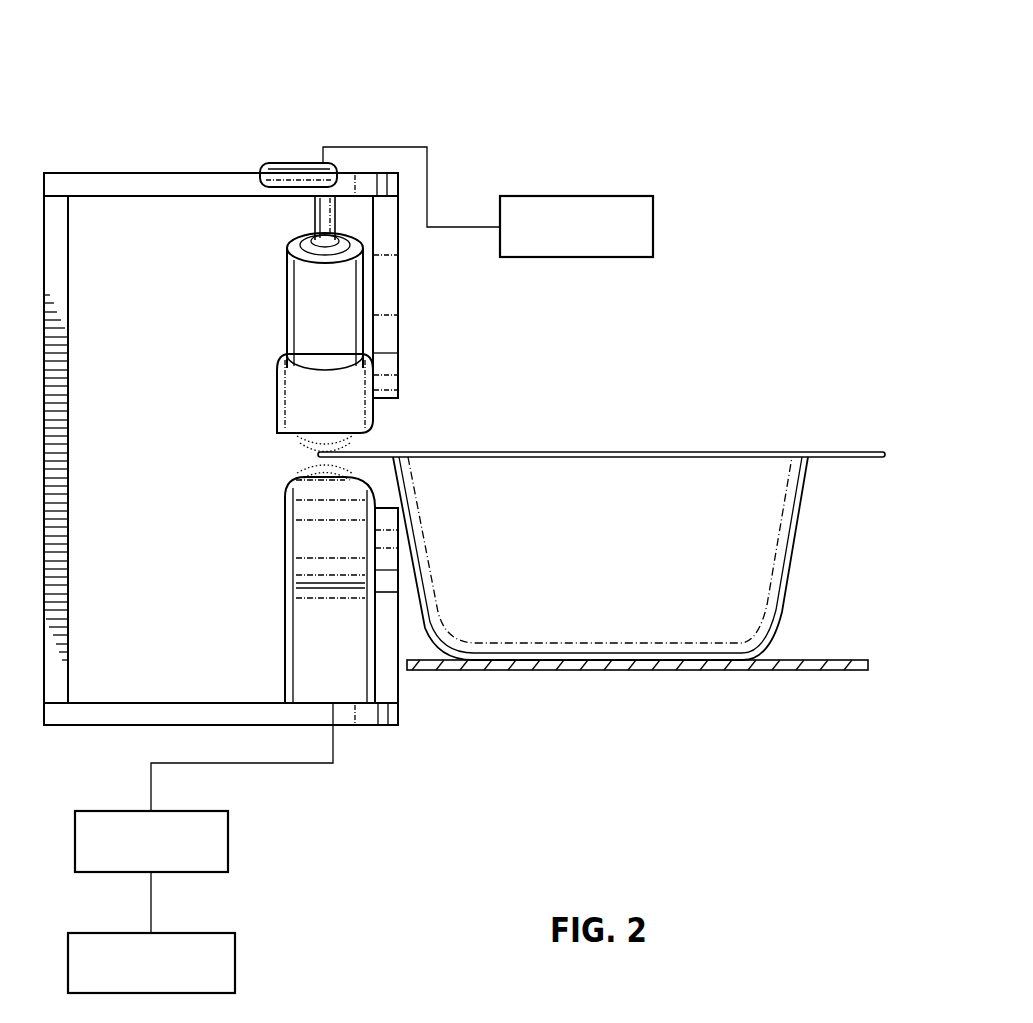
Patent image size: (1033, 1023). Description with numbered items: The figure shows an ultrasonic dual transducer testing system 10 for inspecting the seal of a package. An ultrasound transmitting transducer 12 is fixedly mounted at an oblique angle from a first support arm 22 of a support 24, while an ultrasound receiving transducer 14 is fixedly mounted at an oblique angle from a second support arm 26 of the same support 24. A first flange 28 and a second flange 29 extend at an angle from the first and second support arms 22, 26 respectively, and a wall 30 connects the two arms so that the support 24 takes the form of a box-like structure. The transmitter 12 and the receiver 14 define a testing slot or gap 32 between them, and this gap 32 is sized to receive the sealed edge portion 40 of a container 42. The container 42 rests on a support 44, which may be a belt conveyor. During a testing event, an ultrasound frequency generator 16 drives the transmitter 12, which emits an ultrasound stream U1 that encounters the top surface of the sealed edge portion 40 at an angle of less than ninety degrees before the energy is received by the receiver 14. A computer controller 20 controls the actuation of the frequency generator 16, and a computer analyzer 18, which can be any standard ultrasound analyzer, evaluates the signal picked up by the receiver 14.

The ultrasonic dual transducer testing system 10 is at (72, 122).
The ultrasound transmitting transducer 12 is at (300, 287).
The ultrasound receiving transducer 14 is at (305, 633).
The ultrasound frequency generator 16 is at (653, 222).
The computer analyzer 18 is at (228, 840).
The computer controller 20 is at (235, 963).
The first support arm 22 is at (196, 173).
The support 24 is at (32, 378).
The second support arm 26 is at (89, 717).
The first flange 28 is at (398, 298).
The second flange 29 is at (388, 687).
The wall 30 is at (53, 551).
The testing slot or gap 32 is at (258, 451).
The sealed edge portion 40 is at (388, 452).
The container 42 is at (730, 410).
The support 44 is at (840, 628).
The ultrasound stream U1 is at (340, 448).